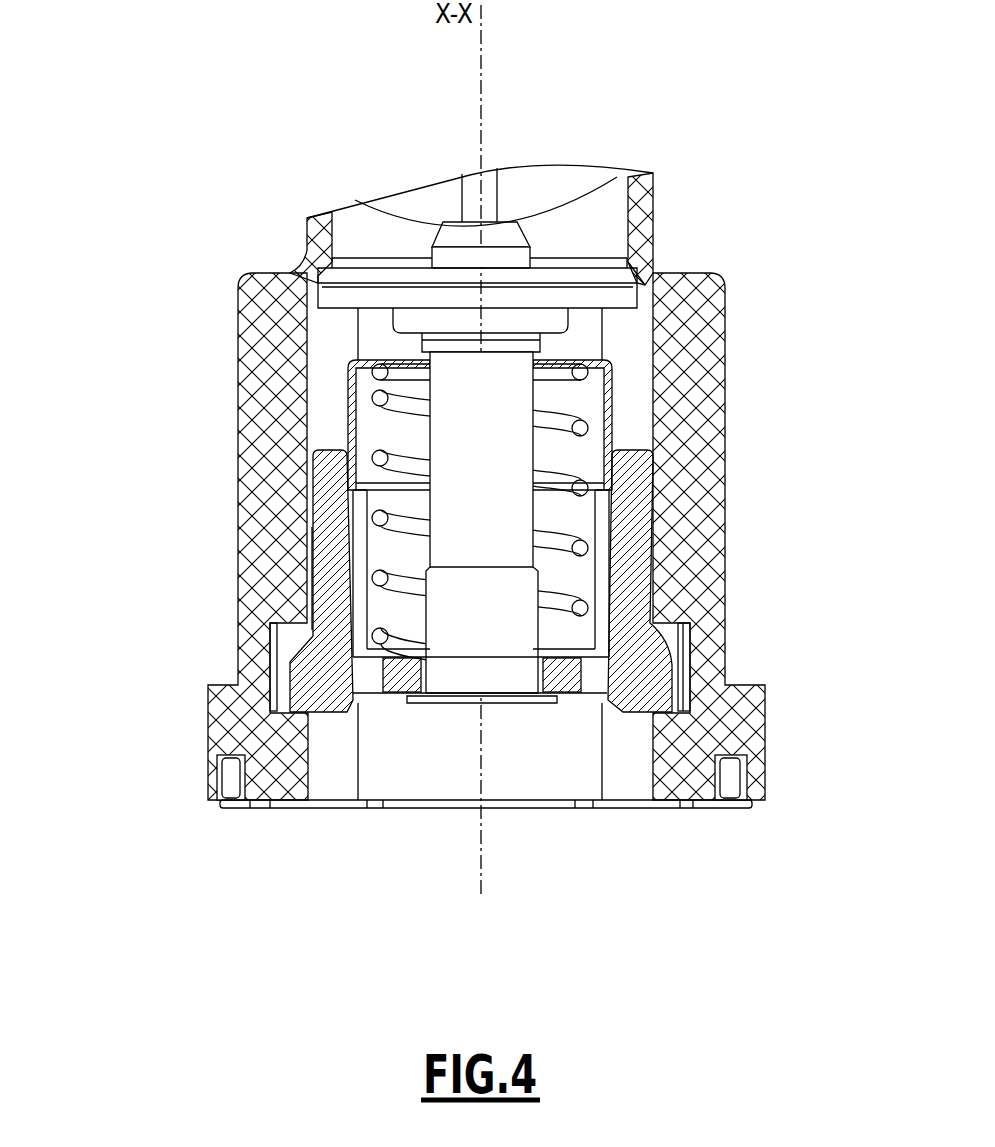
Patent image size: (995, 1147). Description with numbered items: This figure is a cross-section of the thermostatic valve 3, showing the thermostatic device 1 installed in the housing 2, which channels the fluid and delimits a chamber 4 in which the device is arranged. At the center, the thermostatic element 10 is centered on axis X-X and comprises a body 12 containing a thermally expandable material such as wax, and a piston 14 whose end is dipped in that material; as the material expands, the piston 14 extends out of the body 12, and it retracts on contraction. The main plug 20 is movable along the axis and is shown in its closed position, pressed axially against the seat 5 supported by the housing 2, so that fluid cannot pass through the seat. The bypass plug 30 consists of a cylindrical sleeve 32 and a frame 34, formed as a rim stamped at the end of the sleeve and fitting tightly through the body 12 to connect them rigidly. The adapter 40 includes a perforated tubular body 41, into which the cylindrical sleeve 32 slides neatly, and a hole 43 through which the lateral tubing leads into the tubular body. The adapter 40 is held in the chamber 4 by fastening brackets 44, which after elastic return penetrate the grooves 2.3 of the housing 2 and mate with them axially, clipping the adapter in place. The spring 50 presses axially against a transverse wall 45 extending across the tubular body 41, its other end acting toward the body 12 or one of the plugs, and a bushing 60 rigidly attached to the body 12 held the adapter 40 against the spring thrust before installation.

The thermostatic device 1 is at (432, 720).
The housing 2 is at (236, 300).
The grooves 2.3 is at (280, 698).
The thermostatic valve 3 is at (650, 162).
The chamber 4 is at (330, 345).
The seat 5 is at (345, 278).
The thermostatic element 10 is at (570, 335).
The body 12 is at (520, 450).
The piston 14 is at (492, 190).
The main plug 20 is at (632, 280).
The bypass plug 30 is at (349, 511).
The cylindrical sleeve 32 is at (348, 415).
The frame 34 is at (348, 364).
The adapter 40 is at (462, 563).
The tubular body 41 is at (578, 578).
The hole 43 is at (612, 498).
The fastening brackets 44 is at (331, 527).
The transverse wall 45 is at (558, 674).
The spring 50 is at (360, 615).
The bushing 60 is at (410, 675).